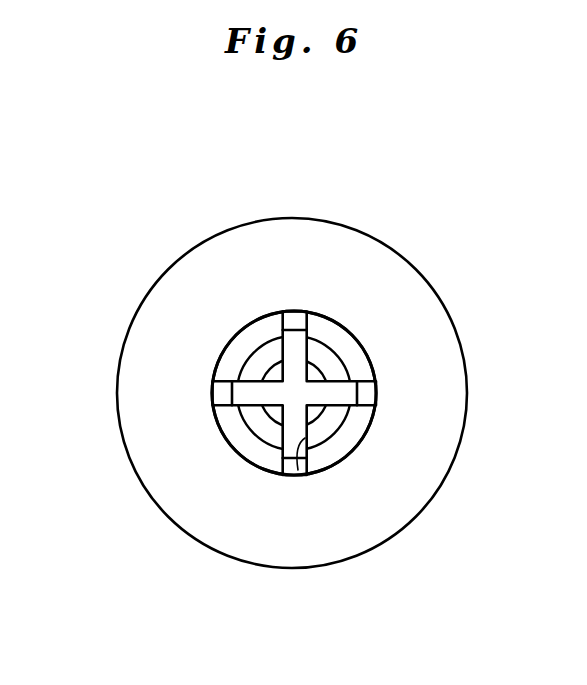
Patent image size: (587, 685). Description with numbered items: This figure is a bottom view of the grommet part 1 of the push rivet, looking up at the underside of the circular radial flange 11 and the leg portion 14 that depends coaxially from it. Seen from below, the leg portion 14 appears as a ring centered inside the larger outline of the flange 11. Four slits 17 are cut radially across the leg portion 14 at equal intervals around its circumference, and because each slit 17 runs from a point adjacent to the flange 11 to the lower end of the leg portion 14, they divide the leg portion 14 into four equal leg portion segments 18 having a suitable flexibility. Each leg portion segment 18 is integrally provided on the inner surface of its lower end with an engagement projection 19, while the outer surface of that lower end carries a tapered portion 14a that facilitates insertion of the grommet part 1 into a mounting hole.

The grommet part 1 is at (283, 402).
The circular radial flange 11 is at (458, 363).
The leg portion 14 is at (333, 310).
The tapered portion 14a is at (227, 367).
The slits 17 is at (298, 470).
The leg portion segments 18 is at (240, 328).
The engagement projection 19 is at (277, 418).